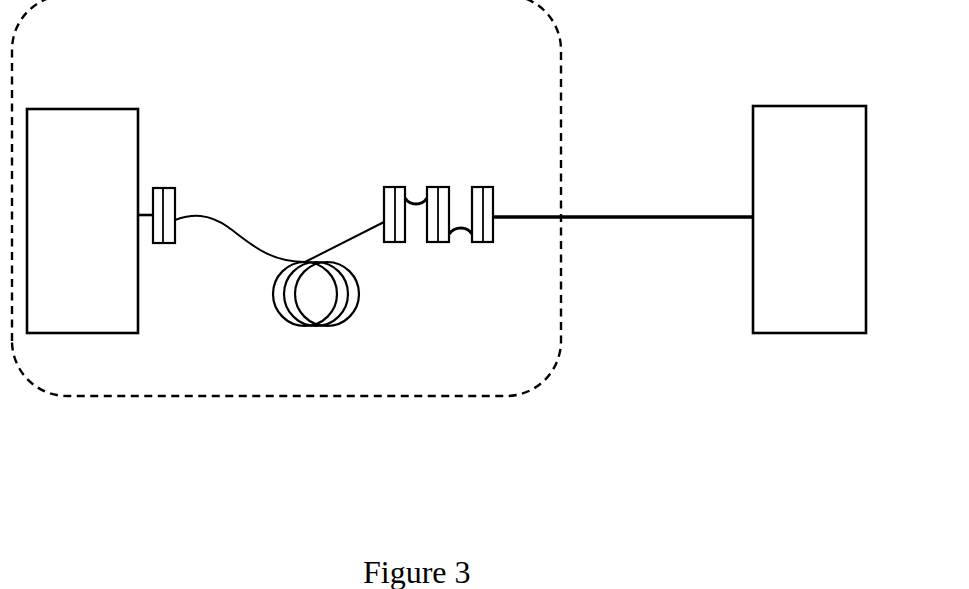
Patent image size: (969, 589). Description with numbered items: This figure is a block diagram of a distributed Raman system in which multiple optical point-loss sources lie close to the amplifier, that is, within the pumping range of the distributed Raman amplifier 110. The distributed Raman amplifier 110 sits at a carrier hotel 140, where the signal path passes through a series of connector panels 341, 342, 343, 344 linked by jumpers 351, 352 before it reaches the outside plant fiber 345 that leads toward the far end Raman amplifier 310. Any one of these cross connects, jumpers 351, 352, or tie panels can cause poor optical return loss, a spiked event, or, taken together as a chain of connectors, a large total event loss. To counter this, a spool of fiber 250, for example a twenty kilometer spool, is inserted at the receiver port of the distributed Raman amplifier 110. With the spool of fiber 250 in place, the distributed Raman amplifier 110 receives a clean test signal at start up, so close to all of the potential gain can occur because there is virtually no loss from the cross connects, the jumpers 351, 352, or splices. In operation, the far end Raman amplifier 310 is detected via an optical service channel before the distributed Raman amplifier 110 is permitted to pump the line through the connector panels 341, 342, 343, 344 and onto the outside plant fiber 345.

The distributed Raman amplifier 110 is at (82, 221).
The carrier hotel 140 is at (286, 198).
The spool of fiber 250 is at (356, 270).
The far end Raman amplifier 310 is at (809, 219).
The connector panel 341 is at (160, 243).
The connector panel 342 is at (390, 187).
The connector panel 343 is at (433, 243).
The connector panel 344 is at (480, 187).
The outside plant fiber 345 is at (602, 214).
The jumper 351 is at (416, 200).
The jumper 352 is at (460, 236).